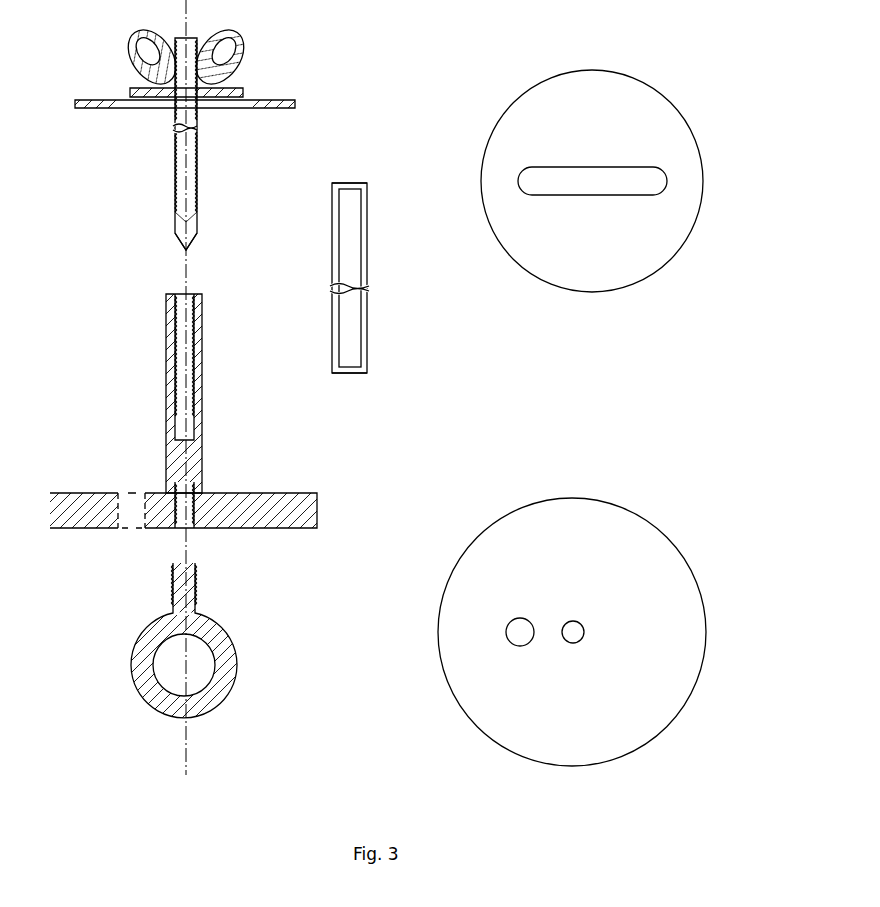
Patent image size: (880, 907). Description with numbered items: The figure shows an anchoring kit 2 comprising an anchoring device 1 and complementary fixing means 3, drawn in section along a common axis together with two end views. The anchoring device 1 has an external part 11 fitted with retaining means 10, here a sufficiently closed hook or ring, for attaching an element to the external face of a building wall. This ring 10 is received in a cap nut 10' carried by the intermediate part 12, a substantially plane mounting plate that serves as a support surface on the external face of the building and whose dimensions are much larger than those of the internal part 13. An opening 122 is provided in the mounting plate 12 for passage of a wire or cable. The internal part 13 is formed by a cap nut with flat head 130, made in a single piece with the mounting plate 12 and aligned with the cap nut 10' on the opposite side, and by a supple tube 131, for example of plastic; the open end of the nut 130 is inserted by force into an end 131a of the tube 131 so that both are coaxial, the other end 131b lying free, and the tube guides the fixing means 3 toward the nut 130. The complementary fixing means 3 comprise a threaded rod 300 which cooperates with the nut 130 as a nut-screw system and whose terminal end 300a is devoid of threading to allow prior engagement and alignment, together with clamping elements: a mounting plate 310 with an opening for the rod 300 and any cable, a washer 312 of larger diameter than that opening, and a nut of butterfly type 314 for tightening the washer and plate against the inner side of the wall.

The anchoring device 1 is at (78, 393).
The anchoring kit 2 is at (86, 269).
The complementary fixing means 3 is at (88, 178).
The retaining means 10 is at (177, 640).
The cap nut 10' is at (565, 656).
The external part 11 is at (98, 597).
The intermediate part 12 is at (66, 494).
The internal part 13 is at (102, 320).
The opening 122 is at (130, 493).
The cap nut with flat head 130 is at (166, 351).
The supple tube 131 is at (365, 335).
The end of the tube 131a is at (329, 383).
The strip upper end 131b is at (360, 174).
The threaded rod 300 is at (197, 183).
The terminal end 300a is at (173, 232).
The mounting plate 310 is at (83, 100).
The washer 312 is at (130, 90).
The nut of butterfly type 314 is at (132, 41).